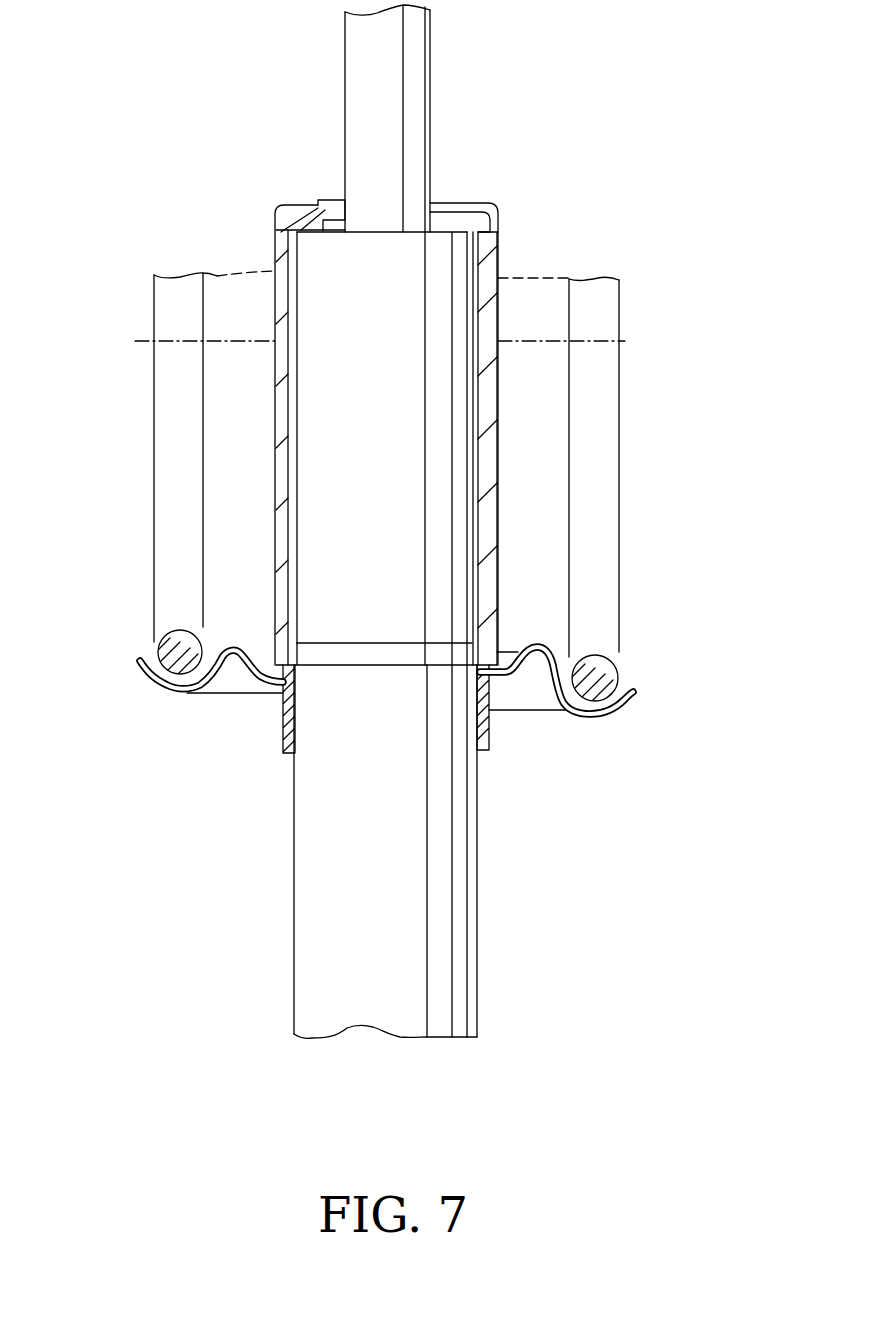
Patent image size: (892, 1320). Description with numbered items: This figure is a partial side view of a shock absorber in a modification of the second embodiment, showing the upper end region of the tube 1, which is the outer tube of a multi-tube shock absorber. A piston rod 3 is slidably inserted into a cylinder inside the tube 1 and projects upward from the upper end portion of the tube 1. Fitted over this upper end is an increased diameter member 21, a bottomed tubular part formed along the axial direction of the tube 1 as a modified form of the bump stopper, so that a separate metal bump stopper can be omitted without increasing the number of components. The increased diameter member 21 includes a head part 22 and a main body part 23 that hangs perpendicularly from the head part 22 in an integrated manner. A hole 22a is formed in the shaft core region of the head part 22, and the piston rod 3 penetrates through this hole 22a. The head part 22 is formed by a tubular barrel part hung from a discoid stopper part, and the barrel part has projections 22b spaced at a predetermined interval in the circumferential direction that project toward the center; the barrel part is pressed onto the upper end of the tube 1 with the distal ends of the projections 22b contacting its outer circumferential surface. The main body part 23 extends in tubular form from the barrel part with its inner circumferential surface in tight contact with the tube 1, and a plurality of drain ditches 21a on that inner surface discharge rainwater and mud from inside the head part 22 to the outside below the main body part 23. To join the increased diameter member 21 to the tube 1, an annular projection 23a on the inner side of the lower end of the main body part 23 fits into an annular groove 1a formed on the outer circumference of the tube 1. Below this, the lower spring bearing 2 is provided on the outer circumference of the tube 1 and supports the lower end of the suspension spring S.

The tube 1 is at (295, 910).
The annular groove 1a is at (368, 655).
The lower spring bearing 2 is at (252, 686).
The piston rod 3 is at (343, 73).
The increased diameter member 21 is at (501, 394).
The drain ditches 21a is at (288, 462).
The head part 22 is at (275, 268).
The hole 22a is at (345, 203).
The projections 22b is at (477, 259).
The main body part 23 is at (275, 497).
The annular projection 23a is at (440, 662).
The suspension spring S is at (628, 673).